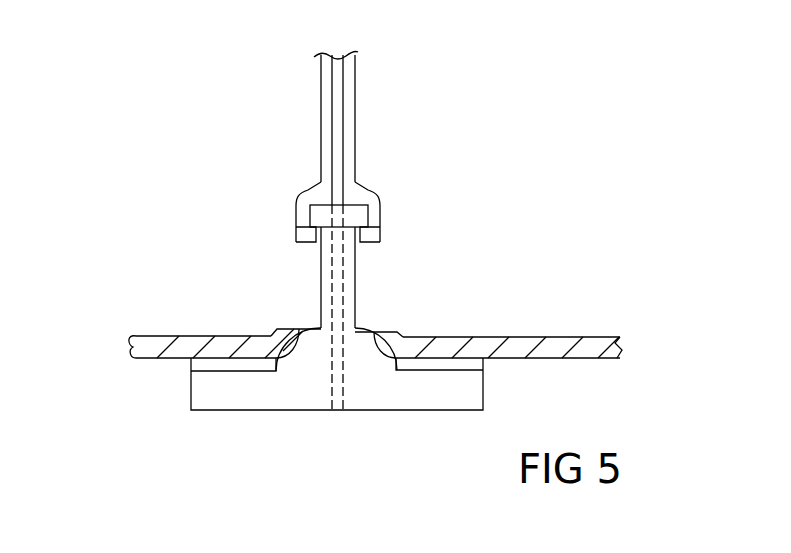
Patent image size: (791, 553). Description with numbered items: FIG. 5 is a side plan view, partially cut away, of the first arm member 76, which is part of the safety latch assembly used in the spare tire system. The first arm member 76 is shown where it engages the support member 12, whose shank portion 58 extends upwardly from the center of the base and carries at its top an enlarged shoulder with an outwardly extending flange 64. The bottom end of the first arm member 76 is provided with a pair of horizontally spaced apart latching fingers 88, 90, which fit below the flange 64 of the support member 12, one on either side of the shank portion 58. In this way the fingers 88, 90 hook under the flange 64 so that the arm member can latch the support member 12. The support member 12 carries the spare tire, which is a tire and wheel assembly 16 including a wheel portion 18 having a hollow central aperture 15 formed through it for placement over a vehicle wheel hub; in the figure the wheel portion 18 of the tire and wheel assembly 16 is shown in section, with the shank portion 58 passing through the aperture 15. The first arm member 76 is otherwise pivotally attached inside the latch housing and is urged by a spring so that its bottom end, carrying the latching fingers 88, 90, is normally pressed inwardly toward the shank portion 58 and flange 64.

The support member 12 is at (296, 428).
The hollow central aperture 15 is at (366, 332).
The tire and wheel assembly 16 is at (530, 337).
The wheel portion 18 is at (568, 370).
The shank portion 58 is at (321, 287).
The flange 64 is at (349, 213).
The first arm member 76 is at (316, 177).
The latching finger 88 is at (381, 244).
The latching finger 90 is at (297, 244).